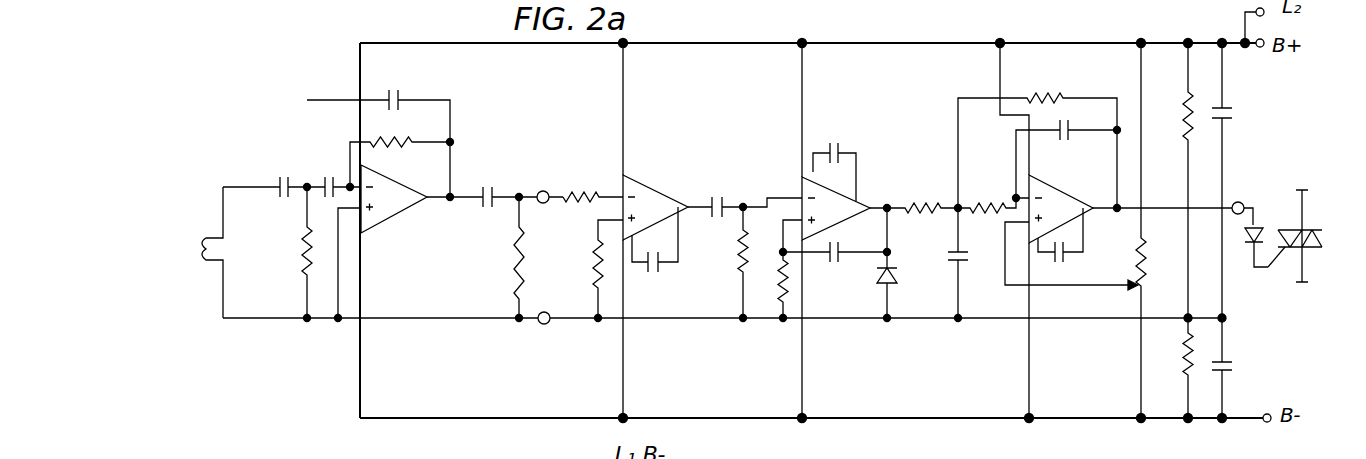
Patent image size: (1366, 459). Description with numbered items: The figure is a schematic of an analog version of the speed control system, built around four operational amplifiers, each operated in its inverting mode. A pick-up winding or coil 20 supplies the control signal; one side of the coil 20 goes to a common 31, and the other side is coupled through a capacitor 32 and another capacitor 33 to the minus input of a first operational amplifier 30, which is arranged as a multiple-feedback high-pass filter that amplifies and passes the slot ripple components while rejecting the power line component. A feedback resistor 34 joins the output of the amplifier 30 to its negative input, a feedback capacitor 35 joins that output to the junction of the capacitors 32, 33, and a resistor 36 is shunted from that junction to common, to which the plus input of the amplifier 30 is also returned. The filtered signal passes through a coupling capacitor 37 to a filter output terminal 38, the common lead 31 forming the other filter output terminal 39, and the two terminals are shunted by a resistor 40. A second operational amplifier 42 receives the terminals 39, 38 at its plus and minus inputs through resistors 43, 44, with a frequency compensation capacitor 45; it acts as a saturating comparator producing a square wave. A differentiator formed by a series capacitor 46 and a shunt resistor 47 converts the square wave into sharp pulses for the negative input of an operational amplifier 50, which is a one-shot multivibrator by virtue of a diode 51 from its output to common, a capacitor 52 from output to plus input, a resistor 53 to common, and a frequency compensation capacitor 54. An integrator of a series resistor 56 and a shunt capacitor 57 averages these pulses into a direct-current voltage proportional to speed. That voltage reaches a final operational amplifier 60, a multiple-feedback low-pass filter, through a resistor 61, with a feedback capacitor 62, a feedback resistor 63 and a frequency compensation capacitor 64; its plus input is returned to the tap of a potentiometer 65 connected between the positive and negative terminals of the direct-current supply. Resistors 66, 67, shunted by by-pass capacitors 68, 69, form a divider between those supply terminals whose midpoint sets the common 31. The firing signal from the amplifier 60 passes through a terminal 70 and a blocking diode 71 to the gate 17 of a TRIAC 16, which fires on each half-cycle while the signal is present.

The TRIAC 16 is at (1322, 252).
The gate 17 is at (1279, 271).
The pick-up winding or coil 20 is at (206, 248).
The first operational amplifier 30 is at (397, 230).
The common 31 is at (265, 320).
The capacitor 32 is at (285, 177).
The capacitor 33 is at (324, 180).
The feedback resistor 34 is at (415, 138).
The feedback capacitor 35 is at (401, 90).
The resistor 36 is at (302, 260).
The coupling capacitor 37 is at (494, 186).
The filter output terminal 38 is at (543, 190).
The filter output terminal 39 is at (547, 325).
The resistor 40 is at (515, 266).
The second operational amplifier 42 is at (676, 191).
The resistor 43 is at (598, 284).
The resistor 44 is at (582, 190).
The frequency compensation capacitor 45 is at (658, 272).
The series capacitor 46 is at (727, 200).
The shunt resistor 47 is at (738, 266).
The operational amplifier 50 is at (860, 204).
The diode 51 is at (894, 280).
The capacitor 52 is at (841, 248).
The resistor 53 is at (782, 306).
The frequency compensation capacitor 54 is at (842, 150).
The series resistor 56 is at (928, 205).
The shunt capacitor 57 is at (968, 258).
The final operational amplifier 60 is at (1078, 195).
The resistor 61 is at (994, 206).
The feedback capacitor 62 is at (1070, 124).
The feedback resistor 63 is at (1054, 96).
The frequency compensation capacitor 64 is at (1066, 254).
The potentiometer 65 is at (1146, 274).
The resistor 66 is at (1183, 134).
The resistor 67 is at (1182, 360).
The by-pass capacitor 68 is at (1233, 112).
The by-pass capacitor 69 is at (1231, 362).
The terminal 70 is at (1239, 200).
The blocking diode 71 is at (1268, 222).